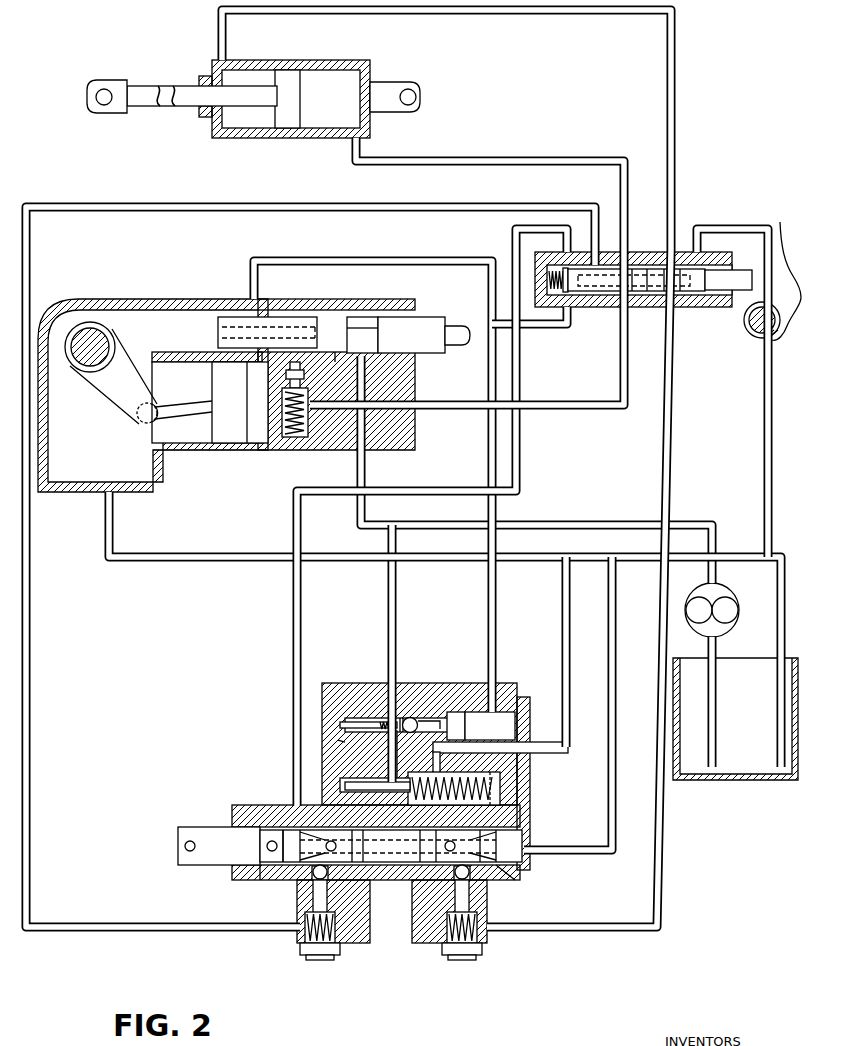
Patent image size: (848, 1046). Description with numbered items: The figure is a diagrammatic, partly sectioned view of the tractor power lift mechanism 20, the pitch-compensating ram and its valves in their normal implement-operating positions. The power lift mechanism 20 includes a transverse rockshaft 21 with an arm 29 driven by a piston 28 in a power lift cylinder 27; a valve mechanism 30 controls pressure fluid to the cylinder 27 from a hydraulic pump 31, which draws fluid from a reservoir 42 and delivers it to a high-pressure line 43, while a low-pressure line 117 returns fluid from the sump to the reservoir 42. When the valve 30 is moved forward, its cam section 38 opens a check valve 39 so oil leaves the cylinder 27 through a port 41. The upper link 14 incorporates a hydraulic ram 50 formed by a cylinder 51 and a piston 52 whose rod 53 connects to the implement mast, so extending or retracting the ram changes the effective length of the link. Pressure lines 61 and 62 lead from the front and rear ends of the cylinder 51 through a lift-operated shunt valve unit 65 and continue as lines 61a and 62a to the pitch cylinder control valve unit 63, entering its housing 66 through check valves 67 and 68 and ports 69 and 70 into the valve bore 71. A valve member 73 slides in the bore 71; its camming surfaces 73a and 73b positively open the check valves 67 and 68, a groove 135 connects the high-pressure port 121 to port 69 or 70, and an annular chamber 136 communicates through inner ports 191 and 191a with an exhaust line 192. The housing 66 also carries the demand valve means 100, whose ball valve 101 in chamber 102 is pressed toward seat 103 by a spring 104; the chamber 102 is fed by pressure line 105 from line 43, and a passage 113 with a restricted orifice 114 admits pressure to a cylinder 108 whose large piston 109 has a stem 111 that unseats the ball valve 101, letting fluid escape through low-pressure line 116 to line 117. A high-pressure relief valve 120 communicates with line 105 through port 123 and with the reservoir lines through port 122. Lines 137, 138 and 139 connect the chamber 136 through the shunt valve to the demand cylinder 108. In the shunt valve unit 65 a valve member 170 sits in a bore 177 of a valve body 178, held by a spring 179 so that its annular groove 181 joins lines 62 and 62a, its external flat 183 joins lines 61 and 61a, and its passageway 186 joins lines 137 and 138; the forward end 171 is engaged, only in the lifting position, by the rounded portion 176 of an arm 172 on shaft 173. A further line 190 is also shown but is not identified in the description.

The upper link 14 is at (253, 95).
The power lift mechanism 20 is at (254, 370).
The transverse rockshaft 21 is at (96, 350).
The power lift cylinder 27 is at (186, 455).
The piston 28 is at (216, 372).
The arm 29 is at (114, 404).
The valve mechanism 30 is at (346, 318).
The hydraulic pump 31 is at (732, 628).
The cam section 38 is at (268, 345).
The check valve 39 is at (282, 397).
The port 41 is at (338, 356).
The reservoir 42 is at (735, 778).
The high-pressure line 43 is at (366, 470).
The hydraulic ram 50 is at (291, 95).
The cylinder 51 is at (355, 64).
The piston 52 is at (290, 115).
The rod 53 is at (180, 86).
The pressure line 61 is at (516, 160).
The pressure line 61a is at (362, 206).
The pressure line 62 is at (482, 14).
The pressure line 62a is at (669, 479).
The pitch cylinder control valve unit 63 is at (391, 799).
The lift-operated shunt valve 65 is at (610, 261).
The housing 66 is at (497, 688).
The check valve 67 is at (321, 919).
The check valve 68 is at (465, 919).
The port 69 is at (366, 944).
The port 70 is at (437, 944).
The valve chamber 71 is at (391, 866).
The valve member 73 is at (365, 845).
The camming surface 73a is at (270, 868).
The camming surface 73b is at (500, 866).
The demand valve means 100 is at (406, 702).
The ball valve 101 is at (402, 716).
The valve chamber 102 is at (384, 720).
The valve seat 103 is at (416, 720).
The spring 104 is at (350, 722).
The pressure line 105 is at (386, 606).
The cylinder 108 is at (505, 722).
The piston 109 is at (466, 732).
The stem 111 is at (455, 716).
The passage 113 is at (523, 700).
The orifice 114 is at (398, 716).
The low-pressure line 116 is at (562, 598).
The low-pressure line 117 is at (231, 553).
The high-pressure relief valve 120 is at (402, 772).
The port 121 is at (345, 786).
The port 122 is at (530, 754).
The port 123 is at (338, 744).
The groove 135 is at (410, 862).
The annular chamber 136 is at (273, 832).
The passageway 137 is at (514, 382).
The passageway 138 is at (552, 330).
The conduit 139 is at (488, 446).
The valve member 170 is at (638, 301).
The forward end 171 is at (740, 278).
The arm 172 is at (774, 333).
The shaft 173 is at (756, 323).
The rounded valve-engaging portion 176 is at (781, 230).
The bore 177 is at (650, 292).
The valve body 178 is at (690, 305).
The spring 179 is at (548, 278).
The annular groove 181 is at (673, 265).
The external flat 183 is at (607, 262).
The passageway 186 is at (568, 232).
The conduit 190 is at (764, 434).
The inner port 191 is at (535, 862).
The inner port 191a is at (268, 846).
The exhaust line 192 is at (612, 744).